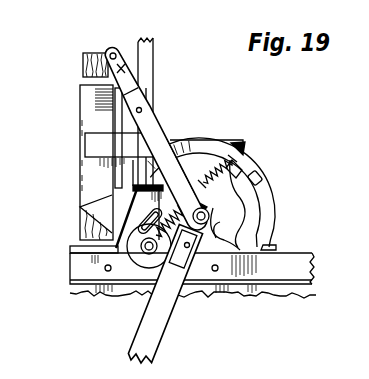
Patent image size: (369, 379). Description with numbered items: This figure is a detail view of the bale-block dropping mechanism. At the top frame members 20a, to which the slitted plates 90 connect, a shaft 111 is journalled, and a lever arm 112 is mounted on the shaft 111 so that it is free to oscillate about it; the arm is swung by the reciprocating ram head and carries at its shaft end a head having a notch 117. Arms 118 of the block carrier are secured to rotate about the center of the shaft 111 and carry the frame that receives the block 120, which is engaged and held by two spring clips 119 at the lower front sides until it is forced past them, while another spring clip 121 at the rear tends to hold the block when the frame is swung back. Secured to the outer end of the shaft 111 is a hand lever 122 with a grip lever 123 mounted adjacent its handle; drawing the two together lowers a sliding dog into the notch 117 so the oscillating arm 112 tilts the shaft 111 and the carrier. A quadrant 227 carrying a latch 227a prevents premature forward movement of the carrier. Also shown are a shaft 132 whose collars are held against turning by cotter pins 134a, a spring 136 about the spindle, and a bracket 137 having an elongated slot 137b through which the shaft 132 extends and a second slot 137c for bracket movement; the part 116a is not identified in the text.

The block 120 is at (83, 67).
The spring clip 121 is at (113, 52).
The hand lever 122 is at (153, 110).
The grip lever 123 is at (128, 72).
The arms 118 is at (168, 150).
The standard 116a is at (94, 107).
The quadrant 227 is at (208, 150).
The bracket 137 is at (242, 143).
The spring 136 is at (240, 150).
The latch 227a is at (252, 177).
The notch 117 is at (240, 198).
The shaft 111 is at (256, 215).
The elongated slot 137b is at (238, 234).
The second slot 137c is at (148, 218).
The spring clips 119 is at (80, 215).
The cotter pins 134a is at (141, 245).
The shaft 132 is at (149, 255).
The lever arm 112 is at (166, 312).
The slitted plates 90 is at (247, 297).
The frame members 20a is at (278, 280).